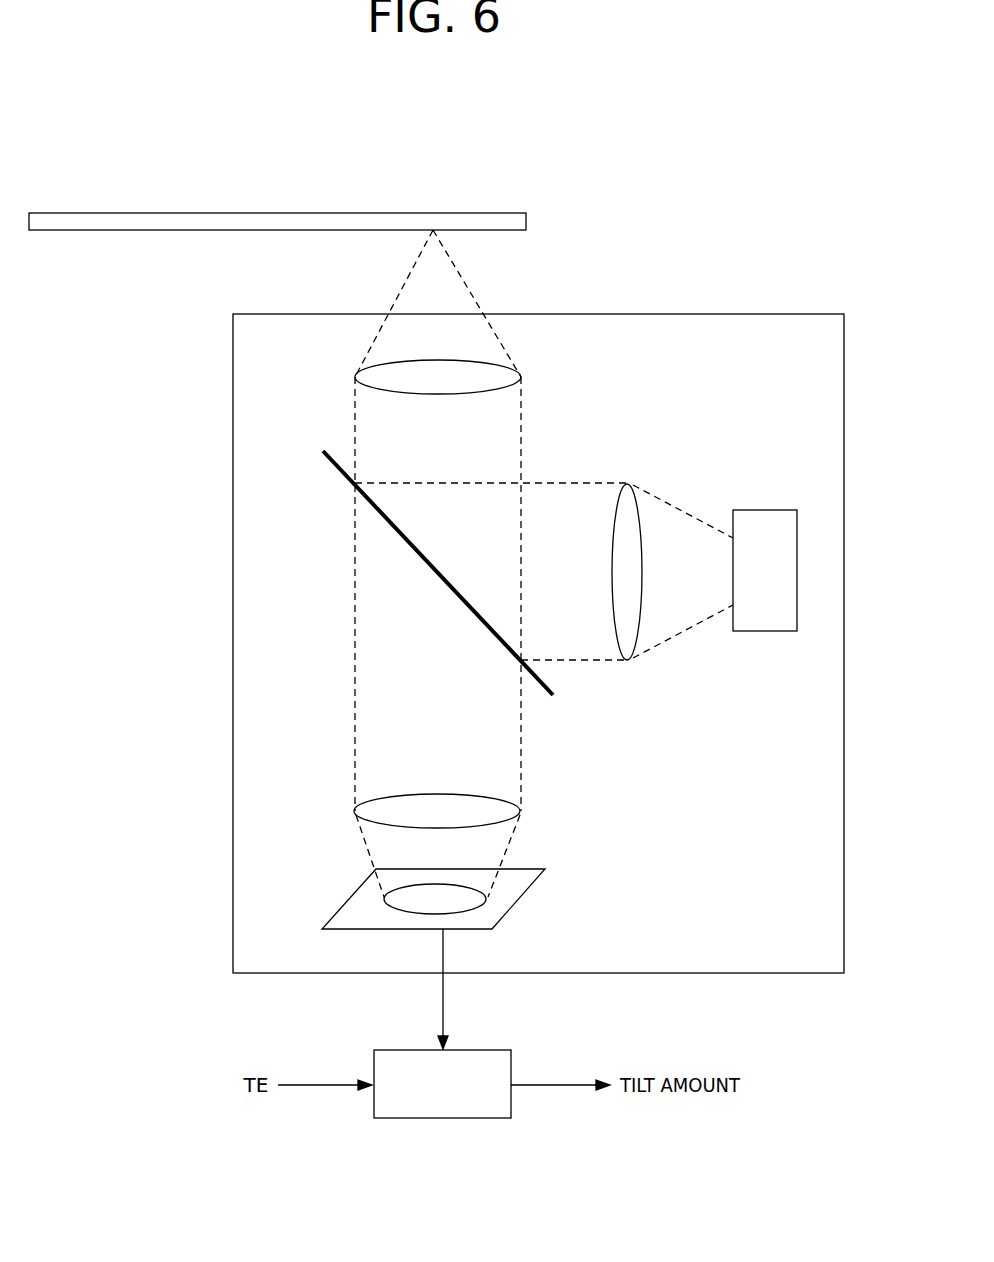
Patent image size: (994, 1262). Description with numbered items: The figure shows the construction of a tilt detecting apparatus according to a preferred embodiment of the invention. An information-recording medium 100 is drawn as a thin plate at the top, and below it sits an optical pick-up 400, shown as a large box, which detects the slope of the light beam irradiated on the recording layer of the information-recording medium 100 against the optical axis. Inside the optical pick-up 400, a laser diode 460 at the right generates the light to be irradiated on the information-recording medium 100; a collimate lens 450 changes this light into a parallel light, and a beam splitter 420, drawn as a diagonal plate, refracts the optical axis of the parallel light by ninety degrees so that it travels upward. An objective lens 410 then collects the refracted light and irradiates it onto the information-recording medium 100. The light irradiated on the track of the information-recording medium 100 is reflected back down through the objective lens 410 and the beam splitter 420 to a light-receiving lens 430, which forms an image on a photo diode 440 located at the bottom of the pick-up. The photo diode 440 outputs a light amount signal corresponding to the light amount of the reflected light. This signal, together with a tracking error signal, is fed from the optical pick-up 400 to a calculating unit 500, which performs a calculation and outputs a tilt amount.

The information-recording medium 100 is at (479, 212).
The optical pick-up 400 is at (775, 313).
The objective lens 410 is at (522, 377).
The beam splitter 420 is at (538, 684).
The light-receiving lens 430 is at (521, 811).
The photo diode 440 is at (540, 888).
The collimate lens 450 is at (627, 660).
The laser diode 460 is at (765, 632).
The calculating unit 500 is at (490, 1048).